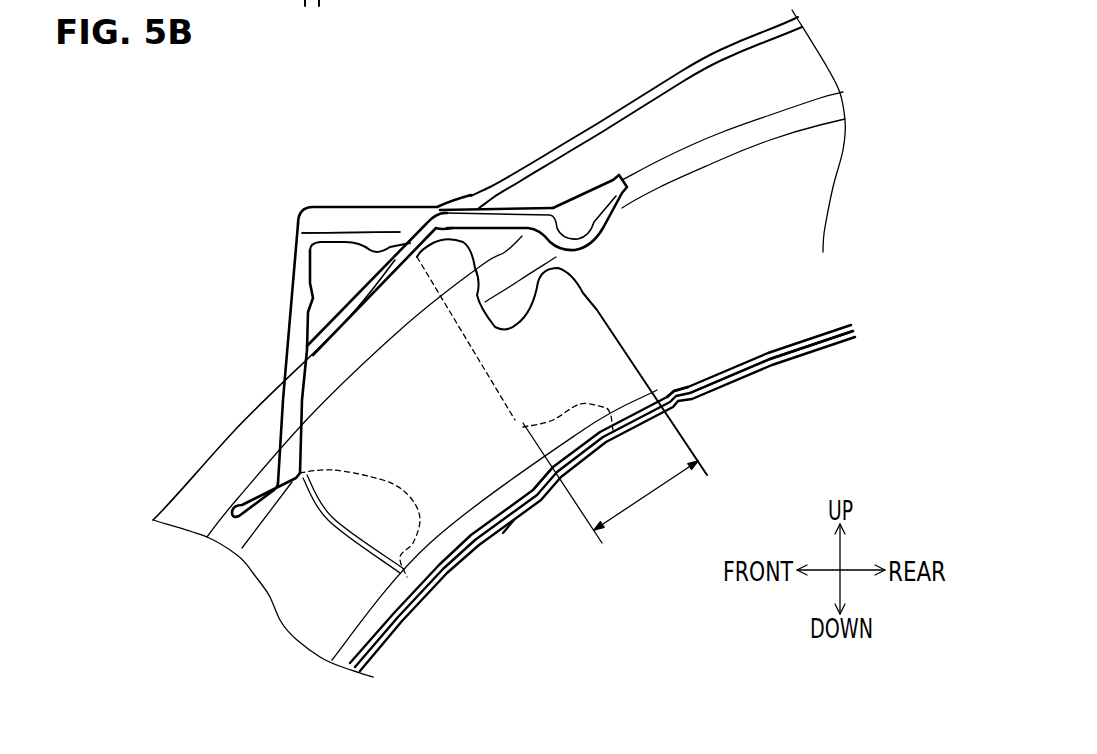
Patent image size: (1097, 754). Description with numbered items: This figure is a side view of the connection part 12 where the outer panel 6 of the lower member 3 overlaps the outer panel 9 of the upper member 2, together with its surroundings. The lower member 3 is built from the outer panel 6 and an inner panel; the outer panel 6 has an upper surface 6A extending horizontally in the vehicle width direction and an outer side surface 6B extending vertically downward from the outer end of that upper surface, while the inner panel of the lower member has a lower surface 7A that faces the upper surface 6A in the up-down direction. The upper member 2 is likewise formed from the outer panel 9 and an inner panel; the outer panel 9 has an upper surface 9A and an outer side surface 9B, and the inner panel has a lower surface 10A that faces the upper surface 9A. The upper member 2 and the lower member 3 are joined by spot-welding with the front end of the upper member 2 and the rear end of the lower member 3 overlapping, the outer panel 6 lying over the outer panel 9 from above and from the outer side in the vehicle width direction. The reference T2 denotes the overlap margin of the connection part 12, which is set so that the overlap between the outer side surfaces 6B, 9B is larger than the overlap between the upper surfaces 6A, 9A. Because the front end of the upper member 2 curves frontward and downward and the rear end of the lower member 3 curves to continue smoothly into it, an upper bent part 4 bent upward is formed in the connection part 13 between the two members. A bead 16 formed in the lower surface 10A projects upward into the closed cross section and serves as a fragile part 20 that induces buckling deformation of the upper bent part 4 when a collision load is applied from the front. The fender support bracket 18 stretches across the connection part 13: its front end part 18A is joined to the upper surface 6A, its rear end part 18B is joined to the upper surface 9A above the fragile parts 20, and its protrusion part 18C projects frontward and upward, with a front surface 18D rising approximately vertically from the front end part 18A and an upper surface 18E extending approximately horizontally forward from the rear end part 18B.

The upper member 2 is at (640, 62).
The lower member 3 is at (482, 460).
The upper bent part 4 is at (342, 184).
The outer panel 6 is at (242, 400).
The upper surface 6A is at (228, 530).
The outer side surface 6B is at (284, 567).
The lower surface 7A is at (390, 633).
The outer panel 9 is at (686, 151).
The upper surface 9A is at (663, 173).
The outer side surface 9B is at (793, 235).
The lower surface 10A is at (813, 355).
The connection part 12 is at (531, 387).
The connection part 13 is at (509, 422).
The bead 16 is at (652, 427).
The fender support bracket 18 is at (432, 304).
The front end part 18A is at (257, 490).
The rear end part 18B is at (590, 200).
The protrusion part 18C is at (298, 232).
The front surface 18D is at (287, 337).
The upper surface 18E is at (378, 217).
The fragile part 20 is at (702, 426).
The overlap margin T2 is at (646, 495).